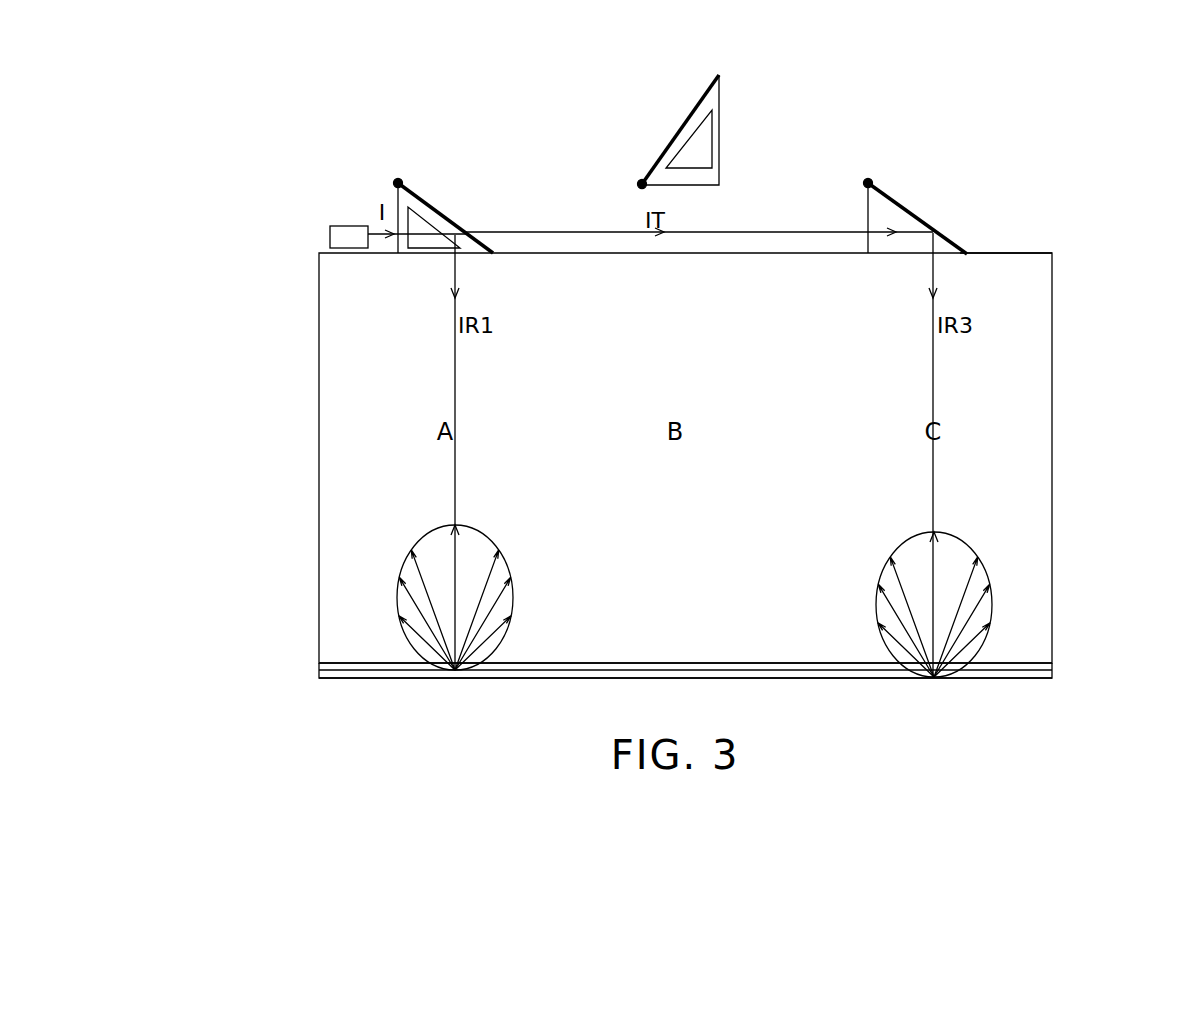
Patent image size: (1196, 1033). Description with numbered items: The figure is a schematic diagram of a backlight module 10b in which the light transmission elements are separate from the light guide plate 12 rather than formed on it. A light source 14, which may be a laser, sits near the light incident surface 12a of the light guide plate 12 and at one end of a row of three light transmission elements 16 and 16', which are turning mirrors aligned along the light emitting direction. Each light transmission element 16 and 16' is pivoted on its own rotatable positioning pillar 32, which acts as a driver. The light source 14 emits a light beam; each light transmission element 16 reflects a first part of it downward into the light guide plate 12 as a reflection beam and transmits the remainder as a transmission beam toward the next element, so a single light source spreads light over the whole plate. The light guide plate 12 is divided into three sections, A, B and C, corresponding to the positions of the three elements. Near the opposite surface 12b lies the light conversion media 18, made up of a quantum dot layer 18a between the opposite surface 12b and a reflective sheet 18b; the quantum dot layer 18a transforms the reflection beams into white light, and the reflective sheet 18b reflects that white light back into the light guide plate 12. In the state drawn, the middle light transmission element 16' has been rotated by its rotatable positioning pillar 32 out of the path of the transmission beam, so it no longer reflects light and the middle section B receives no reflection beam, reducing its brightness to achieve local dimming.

The backlight module 10b is at (222, 108).
The light guide plate 12 is at (362, 408).
The light incident surface 12a is at (998, 255).
The opposite surface 12b is at (810, 662).
The light source 14 is at (348, 233).
The light transmission elements 16 is at (700, 187).
The light transmission element 16' is at (736, 109).
The light conversion media 18 is at (685, 670).
The quantum dot layer 18a is at (1052, 665).
The reflective sheet 18b is at (1052, 673).
The rotatable positioning pillar 32 is at (398, 183).